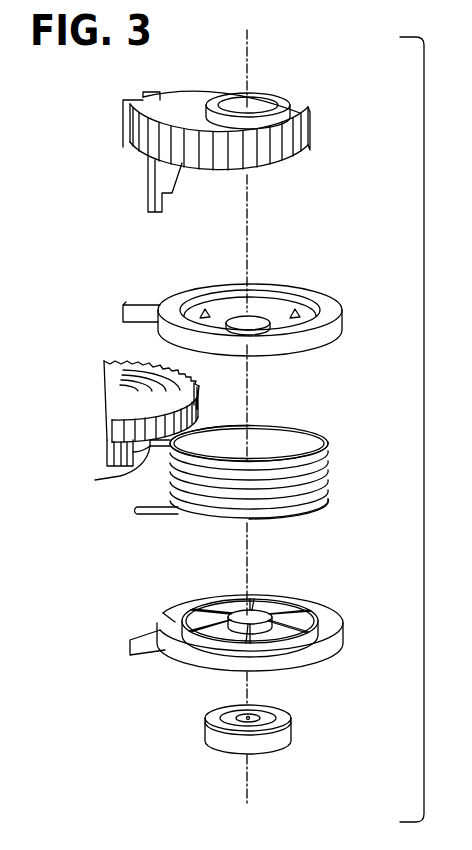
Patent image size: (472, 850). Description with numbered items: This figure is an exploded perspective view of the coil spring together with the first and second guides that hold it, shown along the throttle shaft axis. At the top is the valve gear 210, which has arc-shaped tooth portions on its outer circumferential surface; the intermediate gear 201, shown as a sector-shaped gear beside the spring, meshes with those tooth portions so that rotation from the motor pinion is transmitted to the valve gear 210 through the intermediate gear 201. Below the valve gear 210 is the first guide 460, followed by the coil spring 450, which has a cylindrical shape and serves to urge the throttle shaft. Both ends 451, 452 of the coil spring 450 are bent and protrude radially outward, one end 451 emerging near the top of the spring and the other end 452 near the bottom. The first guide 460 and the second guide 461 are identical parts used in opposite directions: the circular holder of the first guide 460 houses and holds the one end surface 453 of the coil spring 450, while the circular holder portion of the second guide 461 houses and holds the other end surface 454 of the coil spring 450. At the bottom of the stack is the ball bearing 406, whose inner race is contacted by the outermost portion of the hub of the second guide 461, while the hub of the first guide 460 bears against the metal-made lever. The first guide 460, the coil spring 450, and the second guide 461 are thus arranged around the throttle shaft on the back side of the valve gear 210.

The valve gear 210 is at (310, 140).
The first guide 460 is at (332, 298).
The intermediate gear 201 is at (112, 374).
The one end surface 453 is at (286, 427).
The coil spring 450 is at (328, 460).
The end 451 is at (141, 455).
The end 452 is at (142, 516).
The other end surface 454 is at (278, 515).
The second guide 461 is at (361, 622).
The ball bearing 406 is at (295, 735).